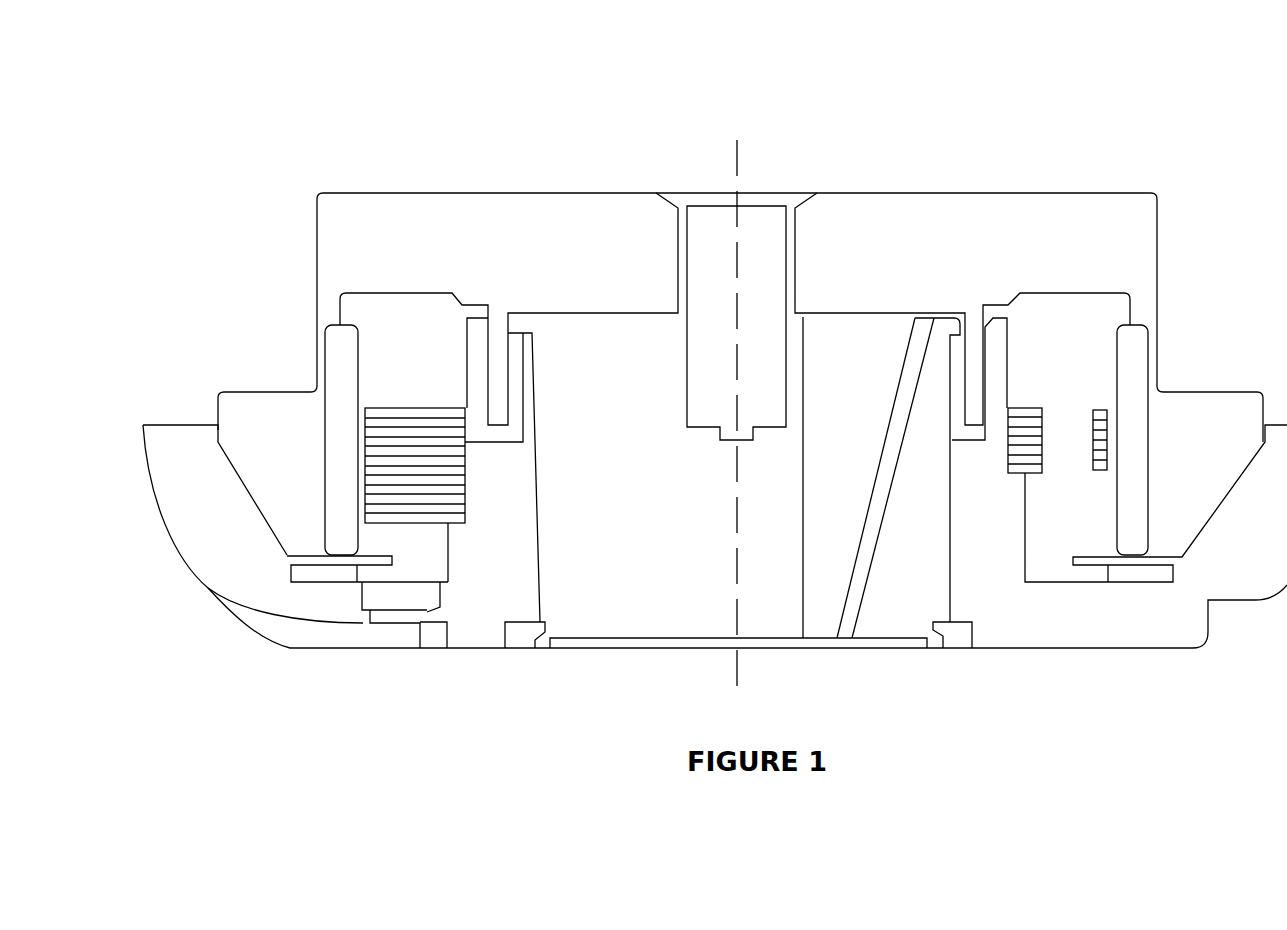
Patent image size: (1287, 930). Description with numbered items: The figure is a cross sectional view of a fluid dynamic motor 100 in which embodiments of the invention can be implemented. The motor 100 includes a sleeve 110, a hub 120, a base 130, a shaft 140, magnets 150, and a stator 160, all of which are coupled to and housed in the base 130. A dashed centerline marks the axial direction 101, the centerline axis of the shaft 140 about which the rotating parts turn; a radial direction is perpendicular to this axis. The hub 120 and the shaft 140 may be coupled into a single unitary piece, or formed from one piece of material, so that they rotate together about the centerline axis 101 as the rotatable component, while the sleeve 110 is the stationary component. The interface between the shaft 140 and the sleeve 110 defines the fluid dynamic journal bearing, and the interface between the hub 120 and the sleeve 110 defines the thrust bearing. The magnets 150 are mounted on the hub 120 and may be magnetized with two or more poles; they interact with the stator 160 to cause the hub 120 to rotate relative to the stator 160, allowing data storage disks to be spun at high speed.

The fluid dynamic motor 100 is at (153, 59).
The centerline axis 101 is at (736, 386).
The sleeve 110 is at (829, 411).
The hub 120 is at (970, 277).
The base 130 is at (1022, 638).
The shaft 140 is at (757, 542).
The magnets 150 is at (1110, 313).
The stator 160 is at (428, 427).